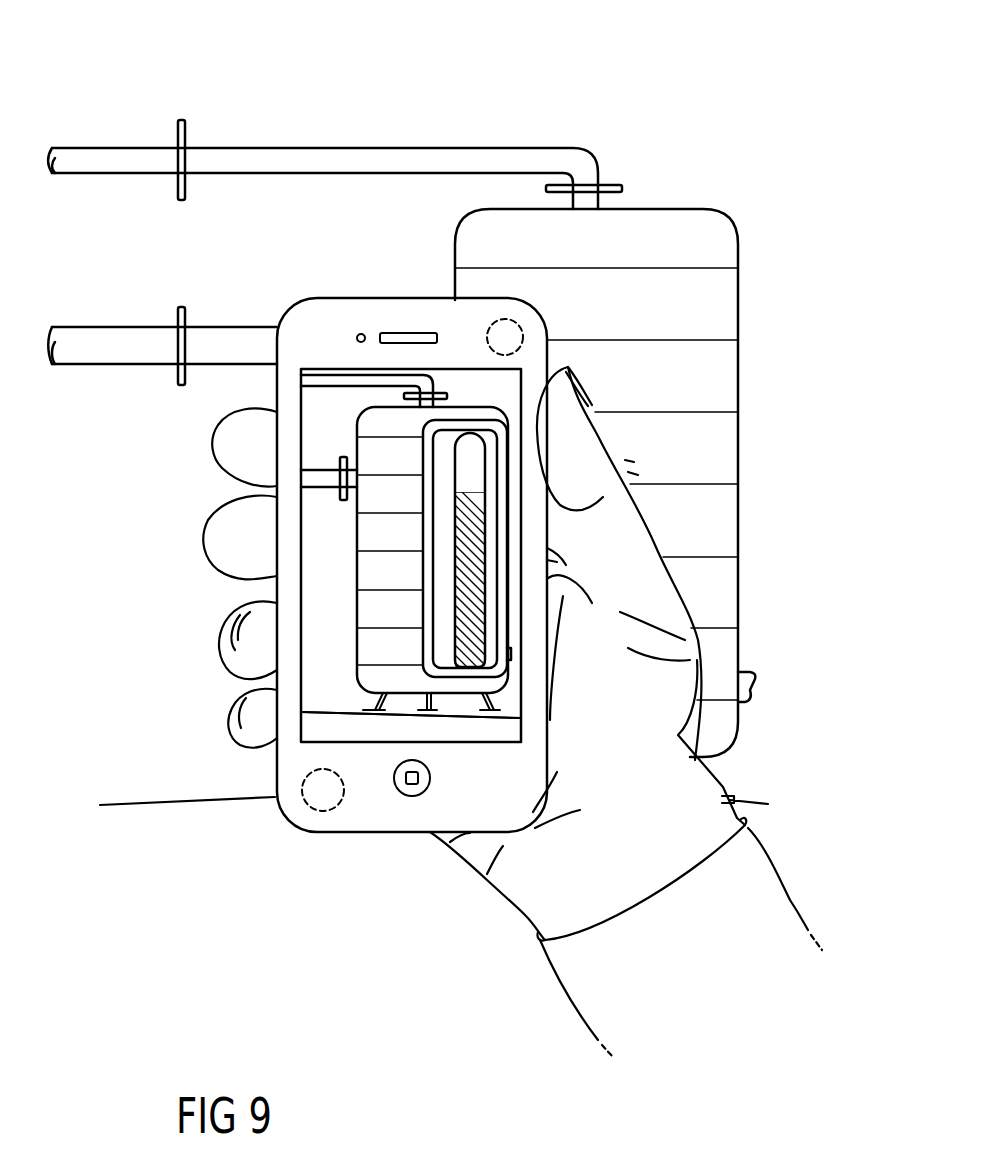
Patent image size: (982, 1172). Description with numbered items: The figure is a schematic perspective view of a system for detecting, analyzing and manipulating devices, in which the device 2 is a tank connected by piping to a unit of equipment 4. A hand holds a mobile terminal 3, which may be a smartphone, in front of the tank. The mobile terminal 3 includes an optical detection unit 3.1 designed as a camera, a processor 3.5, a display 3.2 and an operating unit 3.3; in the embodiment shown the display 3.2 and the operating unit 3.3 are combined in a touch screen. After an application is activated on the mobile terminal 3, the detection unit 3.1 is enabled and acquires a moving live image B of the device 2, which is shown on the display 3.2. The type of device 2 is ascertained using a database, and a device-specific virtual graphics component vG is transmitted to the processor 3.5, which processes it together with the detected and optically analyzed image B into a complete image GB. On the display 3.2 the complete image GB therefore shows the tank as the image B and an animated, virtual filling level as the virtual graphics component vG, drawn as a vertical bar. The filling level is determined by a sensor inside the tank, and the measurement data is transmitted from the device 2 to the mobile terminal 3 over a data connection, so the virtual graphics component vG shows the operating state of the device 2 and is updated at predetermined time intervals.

The device 2 is at (705, 228).
The unit of equipment 4 is at (364, 145).
The mobile terminal 3 is at (286, 299).
The optical detection unit 3.1 is at (518, 338).
The display 3.2 is at (450, 378).
The operating unit 3.3 is at (318, 728).
The processor 3.5 is at (318, 800).
The image B is at (335, 450).
The virtual graphics component vG is at (458, 520).
The complete image GB is at (324, 590).